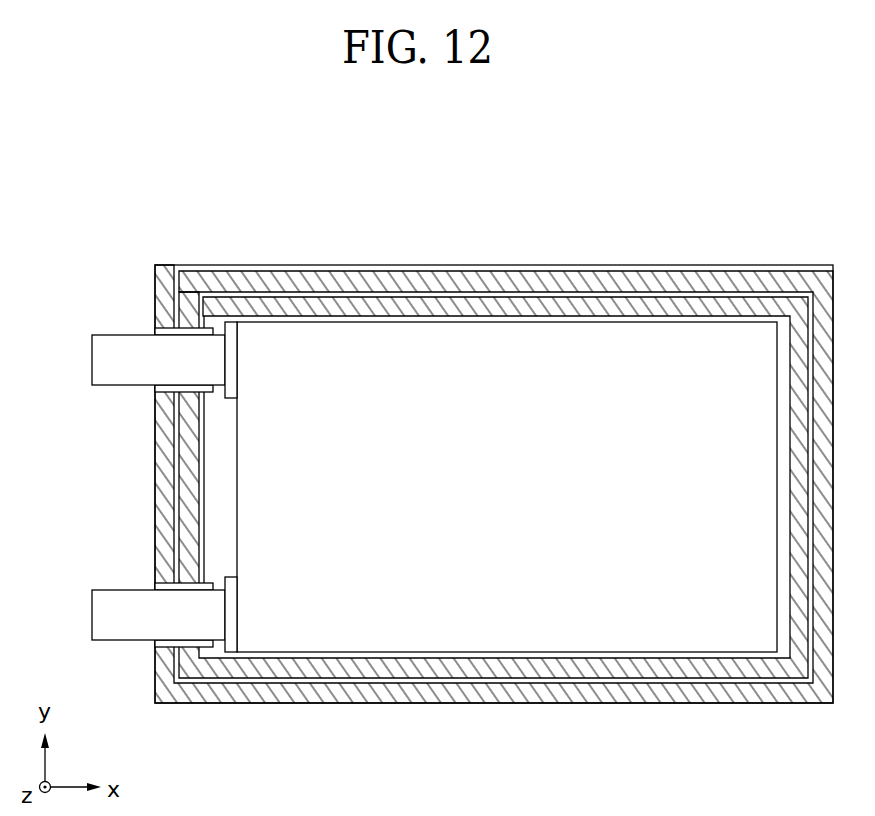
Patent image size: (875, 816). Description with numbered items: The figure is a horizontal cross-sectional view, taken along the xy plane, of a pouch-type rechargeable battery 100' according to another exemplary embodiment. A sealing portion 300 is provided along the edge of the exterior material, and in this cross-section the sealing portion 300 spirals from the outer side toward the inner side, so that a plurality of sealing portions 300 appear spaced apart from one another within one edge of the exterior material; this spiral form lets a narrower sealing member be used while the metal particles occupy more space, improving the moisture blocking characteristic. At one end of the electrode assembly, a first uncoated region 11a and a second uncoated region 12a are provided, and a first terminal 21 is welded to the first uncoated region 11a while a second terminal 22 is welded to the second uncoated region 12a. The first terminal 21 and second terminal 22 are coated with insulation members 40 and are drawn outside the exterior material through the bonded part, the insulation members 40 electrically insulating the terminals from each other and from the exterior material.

The pouch-type rechargeable battery 100' is at (494, 433).
The sealing portion 300 is at (405, 282).
The first uncoated region 11a is at (233, 348).
The second uncoated region 12a is at (230, 627).
The first terminal 21 is at (102, 360).
The second terminal 22 is at (102, 612).
The insulation member 40 is at (163, 587).